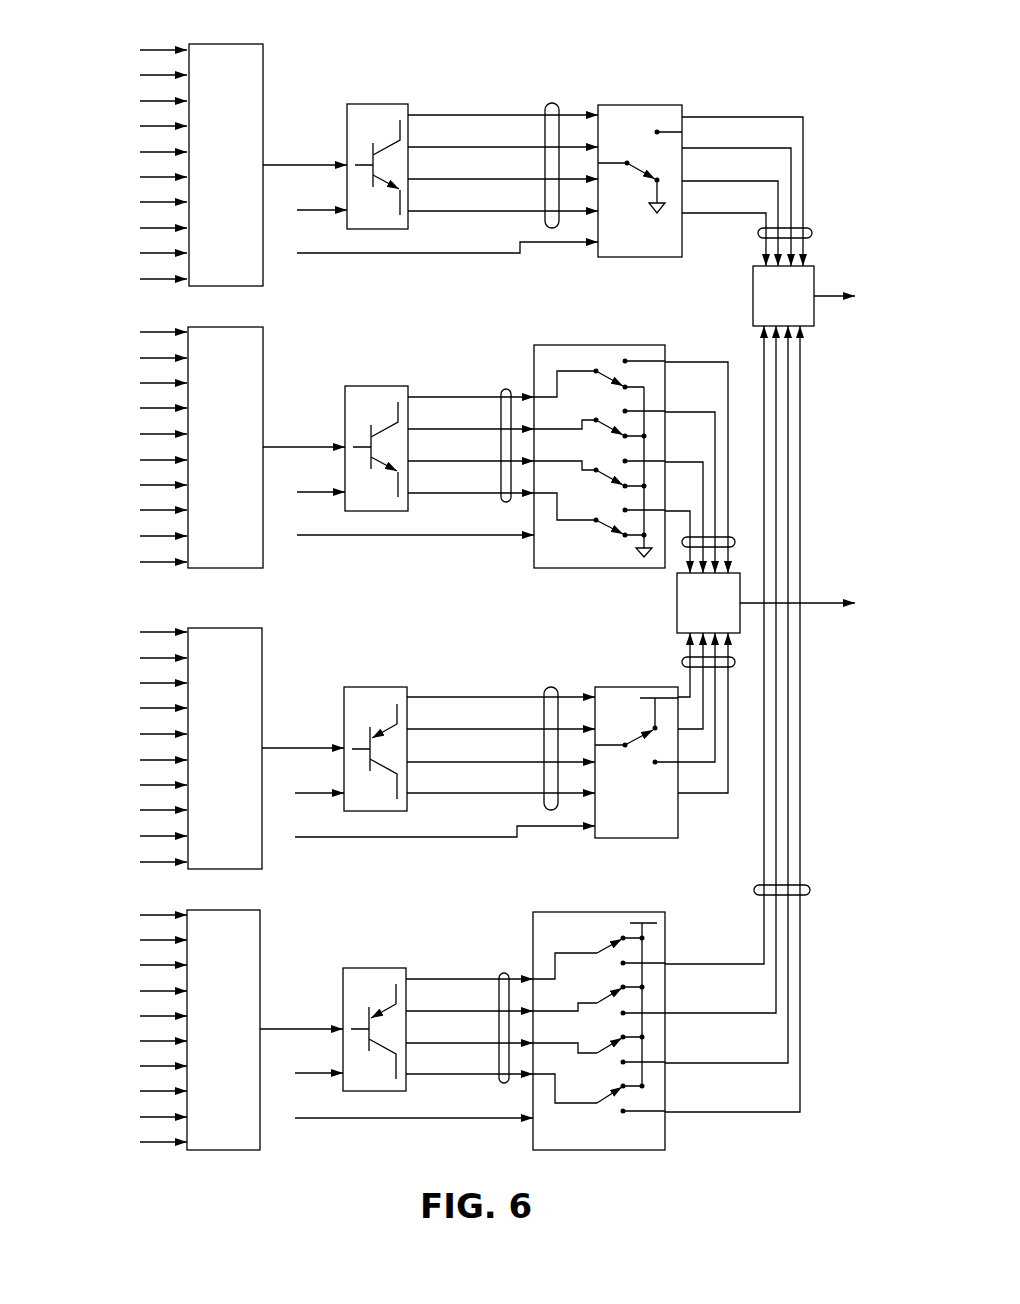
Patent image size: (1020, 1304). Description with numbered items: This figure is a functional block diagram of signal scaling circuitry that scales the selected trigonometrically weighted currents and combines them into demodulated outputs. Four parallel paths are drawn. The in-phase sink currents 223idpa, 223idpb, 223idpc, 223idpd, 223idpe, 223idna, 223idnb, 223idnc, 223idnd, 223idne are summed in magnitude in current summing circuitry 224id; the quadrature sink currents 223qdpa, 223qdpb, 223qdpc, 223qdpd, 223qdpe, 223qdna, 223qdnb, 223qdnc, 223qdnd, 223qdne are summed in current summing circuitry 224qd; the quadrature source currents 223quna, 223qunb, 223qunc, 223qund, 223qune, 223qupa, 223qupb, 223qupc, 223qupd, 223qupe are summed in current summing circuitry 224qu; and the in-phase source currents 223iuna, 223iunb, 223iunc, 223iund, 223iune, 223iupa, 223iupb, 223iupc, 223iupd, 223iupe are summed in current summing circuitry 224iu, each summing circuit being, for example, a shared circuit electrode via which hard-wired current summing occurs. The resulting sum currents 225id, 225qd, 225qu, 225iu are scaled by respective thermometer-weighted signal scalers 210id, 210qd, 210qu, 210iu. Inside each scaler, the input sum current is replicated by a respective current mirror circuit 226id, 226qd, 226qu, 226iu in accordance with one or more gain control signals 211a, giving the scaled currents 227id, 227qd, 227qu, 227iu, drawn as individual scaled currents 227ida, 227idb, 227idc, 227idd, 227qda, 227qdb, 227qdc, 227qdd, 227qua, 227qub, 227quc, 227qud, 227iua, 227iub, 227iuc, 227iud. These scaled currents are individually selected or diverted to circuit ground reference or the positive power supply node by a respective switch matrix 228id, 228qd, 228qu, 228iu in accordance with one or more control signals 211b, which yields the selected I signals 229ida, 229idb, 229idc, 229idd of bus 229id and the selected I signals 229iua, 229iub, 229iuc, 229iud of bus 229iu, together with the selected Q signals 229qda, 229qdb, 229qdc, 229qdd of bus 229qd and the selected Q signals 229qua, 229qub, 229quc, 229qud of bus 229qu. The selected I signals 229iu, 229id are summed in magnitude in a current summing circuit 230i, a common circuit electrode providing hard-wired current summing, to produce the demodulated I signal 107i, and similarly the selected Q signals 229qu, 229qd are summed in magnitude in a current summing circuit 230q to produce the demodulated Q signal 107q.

The thermometer-weighted signal scaler 210id is at (466, 62).
The thermometer-weighted signal scaler 210qd is at (475, 313).
The thermometer-weighted signal scaler 210qu is at (470, 637).
The thermometer-weighted signal scaler 210iu is at (470, 893).
The sink current 223idpa is at (122, 50).
The sink current 223idpb is at (122, 75).
The sink current 223idpc is at (122, 101).
The sink current 223idpd is at (122, 126).
The sink current 223idpe is at (122, 152).
The sink current 223idna is at (122, 177).
The sink current 223idnb is at (122, 202).
The sink current 223idnc is at (122, 228).
The sink current 223idnd is at (122, 253).
The sink current 223idne is at (122, 279).
The sink current 223qdpa is at (122, 332).
The sink current 223qdpb is at (122, 358).
The sink current 223qdpc is at (122, 383).
The sink current 223qdpd is at (122, 408).
The sink current 223qdpe is at (122, 434).
The sink current 223qdna is at (122, 460).
The sink current 223qdnb is at (122, 485).
The sink current 223qdnc is at (122, 510).
The sink current 223qdnd is at (122, 536).
The sink current 223qdne is at (122, 562).
The source current 223quna is at (122, 632).
The source current 223qunb is at (122, 658).
The source current 223qunc is at (122, 683).
The source current 223qund is at (122, 708).
The source current 223qune is at (122, 734).
The source current 223qupa is at (122, 760).
The source current 223qupb is at (122, 785).
The source current 223qupc is at (122, 810).
The source current 223qupd is at (122, 836).
The source current 223qupe is at (122, 862).
The source current 223iuna is at (122, 915).
The source current 223iunb is at (122, 940).
The source current 223iunc is at (122, 965).
The source current 223iund is at (122, 991).
The source current 223iune is at (122, 1016).
The source current 223iupa is at (122, 1041).
The source current 223iupb is at (122, 1066).
The source current 223iupc is at (122, 1091).
The source current 223iupd is at (122, 1117).
The source current 223iupe is at (122, 1142).
The current summing circuitry 224id is at (263, 66).
The current summing circuitry 224qd is at (263, 349).
The current summing circuitry 224qu is at (262, 650).
The current summing circuitry 224iu is at (260, 932).
The sum current 225id is at (315, 162).
The sum current 225qd is at (315, 445).
The sum current 225qu is at (312, 746).
The sum current 225iu is at (315, 1027).
The gain control signal 211a is at (320, 210).
The control signal 211b is at (338, 253).
The current mirror circuit 226id is at (372, 104).
The current mirror circuit 226qd is at (372, 386).
The current mirror circuit 226qu is at (374, 687).
The current mirror circuit 226iu is at (392, 968).
The scaled current 227id is at (548, 104).
The scaled current 227qd is at (504, 389).
The scaled current 227qu is at (546, 687).
The scaled current 227iu is at (500, 973).
The scaled current 227ida is at (522, 113).
The scaled current 227idb is at (522, 145).
The scaled current 227idc is at (522, 177).
The scaled current 227idd is at (522, 209).
The scaled current 227qda is at (498, 392).
The scaled current 227qdb is at (498, 424).
The scaled current 227qdc is at (498, 456).
The scaled current 227qdd is at (498, 488).
The scaled current 227qua is at (517, 695).
The scaled current 227qub is at (517, 727).
The scaled current 227quc is at (517, 760).
The scaled current 227qud is at (517, 791).
The scaled current 227iua is at (496, 978).
The scaled current 227iub is at (496, 1010).
The scaled current 227iuc is at (496, 1042).
The scaled current 227iud is at (496, 1074).
The switch matrix 228id is at (638, 105).
The switch matrix 228qd is at (534, 553).
The switch matrix 228qu is at (635, 687).
The switch matrix 228iu is at (610, 912).
The selected I signal 229ida is at (690, 117).
The selected I signal 229idb is at (690, 148).
The selected I signal 229idc is at (690, 181).
The selected I signal 229idd is at (690, 213).
The selected I signal 229id is at (812, 230).
The selected Q signal 229qda is at (702, 362).
The selected Q signal 229qdb is at (707, 400).
The selected Q signal 229qdc is at (693, 447).
The selected Q signal 229qdd is at (680, 492).
The selected Q signal 229qd is at (735, 542).
The selected Q signal 229qua is at (705, 692).
The selected Q signal 229qub is at (718, 724).
The selected Q signal 229quc is at (728, 757).
The selected Q signal 229qud is at (732, 788).
The selected Q signal 229qu is at (735, 662).
The selected I signal 229iua is at (680, 964).
The selected I signal 229iub is at (680, 1013).
The selected I signal 229iuc is at (680, 1063).
The selected I signal 229iud is at (680, 1112).
The selected I signal 229iu is at (812, 888).
The demodulated I signal 107i is at (826, 290).
The demodulated Q signal 107q is at (830, 600).
The current summing circuit 230i is at (814, 312).
The current summing circuit 230q is at (740, 615).